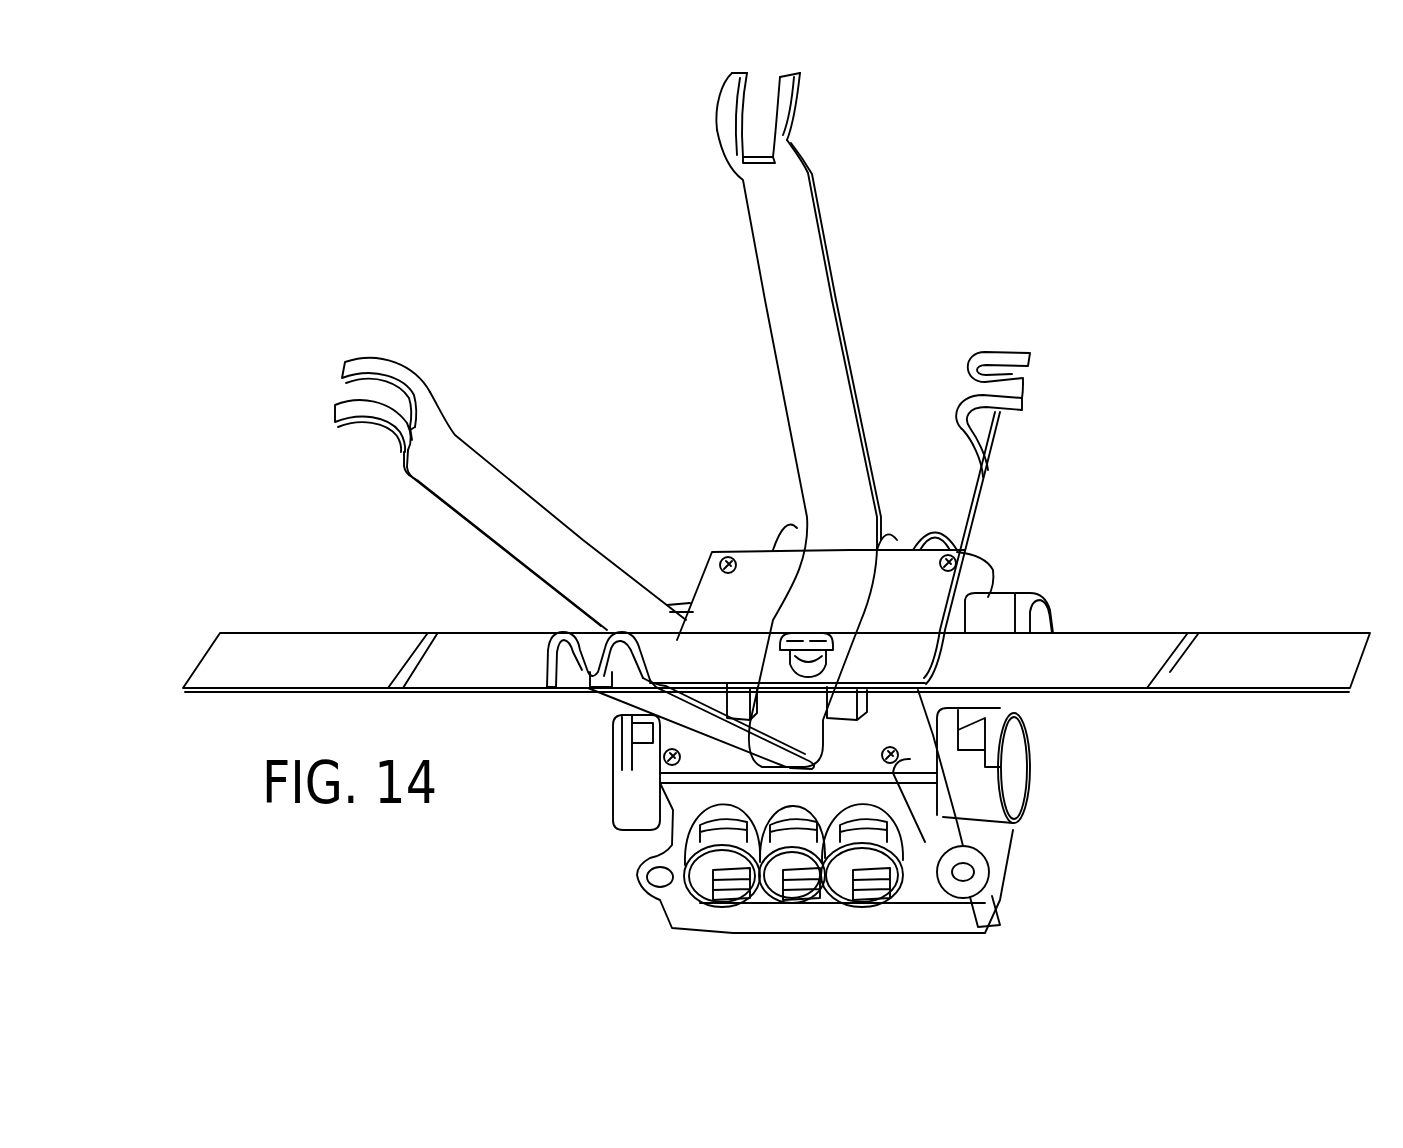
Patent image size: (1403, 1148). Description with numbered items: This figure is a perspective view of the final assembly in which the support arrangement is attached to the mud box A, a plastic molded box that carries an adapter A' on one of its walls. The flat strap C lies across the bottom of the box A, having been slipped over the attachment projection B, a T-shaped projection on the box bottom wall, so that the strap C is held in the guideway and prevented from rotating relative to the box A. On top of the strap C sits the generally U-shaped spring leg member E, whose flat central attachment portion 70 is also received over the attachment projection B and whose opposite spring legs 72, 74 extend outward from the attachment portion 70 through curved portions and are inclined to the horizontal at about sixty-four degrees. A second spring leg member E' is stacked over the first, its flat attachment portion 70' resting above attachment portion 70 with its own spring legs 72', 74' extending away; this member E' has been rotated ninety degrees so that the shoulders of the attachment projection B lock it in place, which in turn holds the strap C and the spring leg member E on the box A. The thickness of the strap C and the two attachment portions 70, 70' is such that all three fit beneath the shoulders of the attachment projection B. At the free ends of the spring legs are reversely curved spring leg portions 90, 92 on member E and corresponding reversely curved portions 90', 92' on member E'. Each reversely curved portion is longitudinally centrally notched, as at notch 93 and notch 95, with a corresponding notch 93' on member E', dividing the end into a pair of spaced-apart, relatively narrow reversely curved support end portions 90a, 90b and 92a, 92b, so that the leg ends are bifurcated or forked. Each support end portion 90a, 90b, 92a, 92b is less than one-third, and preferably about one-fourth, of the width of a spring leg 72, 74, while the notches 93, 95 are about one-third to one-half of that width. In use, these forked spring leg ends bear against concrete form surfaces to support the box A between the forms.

The reversely curved spring leg portion 90 is at (417, 353).
The reversely curved spring leg portion 90' is at (696, 98).
The reversely curved support end portion 90a is at (732, 82).
The reversely curved support end portion 90b is at (782, 90).
The notch 93 is at (344, 403).
The notch 93' is at (799, 109).
The reversely curved spring leg portion 92 is at (1047, 340).
The reversely curved spring leg portion 92' is at (561, 689).
The reversely curved support end portion 92a is at (1022, 404).
The reversely curved support end portion 92b is at (1027, 360).
The notch 95 is at (1024, 380).
The spring leg 72 is at (502, 539).
The spring leg 72' is at (849, 341).
The spring leg 74 is at (984, 548).
The spring leg 74' is at (683, 723).
The flat central attachment portion 70 is at (758, 622).
The flat attachment portion 70' is at (821, 627).
The spring leg member E is at (546, 510).
The spring leg member E' is at (823, 448).
The attachment projection B is at (795, 618).
The strap C is at (215, 617).
The mud box A is at (870, 763).
The adapter A' is at (993, 819).